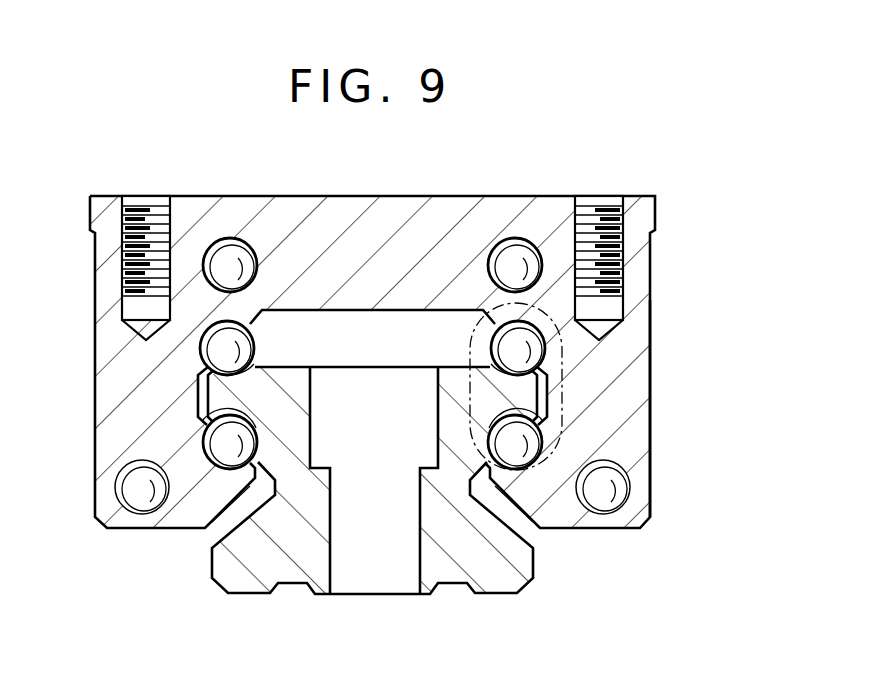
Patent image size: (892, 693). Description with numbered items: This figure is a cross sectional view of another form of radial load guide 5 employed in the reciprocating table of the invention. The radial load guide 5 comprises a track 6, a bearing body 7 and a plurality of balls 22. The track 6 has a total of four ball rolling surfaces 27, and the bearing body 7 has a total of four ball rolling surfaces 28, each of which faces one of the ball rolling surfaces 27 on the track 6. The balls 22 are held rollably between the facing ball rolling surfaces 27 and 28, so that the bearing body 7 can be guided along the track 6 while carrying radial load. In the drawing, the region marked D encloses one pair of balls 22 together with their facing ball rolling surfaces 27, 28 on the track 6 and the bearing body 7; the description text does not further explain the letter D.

The radial load guide 5 is at (660, 195).
The track 6 is at (505, 582).
The bearing body 7 is at (633, 320).
The balls 22 is at (215, 335).
The ball rolling surfaces 27 is at (202, 440).
The ball rolling surfaces 28 is at (258, 330).
The ball pair region D is at (544, 482).